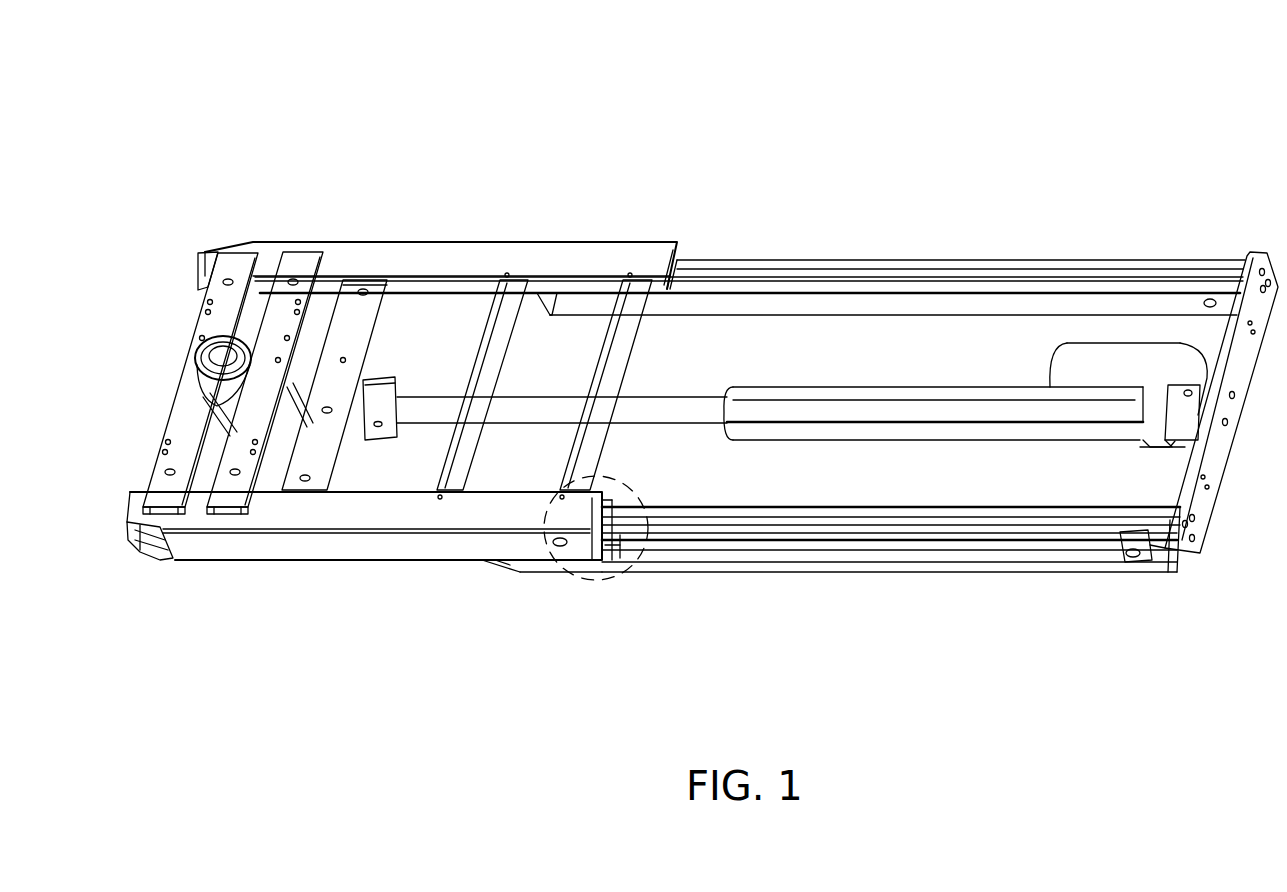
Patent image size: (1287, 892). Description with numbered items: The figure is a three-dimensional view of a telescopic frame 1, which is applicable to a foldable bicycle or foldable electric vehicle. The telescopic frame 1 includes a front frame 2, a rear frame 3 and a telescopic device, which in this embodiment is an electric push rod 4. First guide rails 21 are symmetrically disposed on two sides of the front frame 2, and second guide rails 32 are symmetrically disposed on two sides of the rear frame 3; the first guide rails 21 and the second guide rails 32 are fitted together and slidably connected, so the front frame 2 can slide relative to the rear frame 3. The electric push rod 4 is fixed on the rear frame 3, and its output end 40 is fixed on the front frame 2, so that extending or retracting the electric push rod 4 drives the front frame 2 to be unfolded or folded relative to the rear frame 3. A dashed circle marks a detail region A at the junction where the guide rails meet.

The telescopic frame 1 is at (184, 117).
The front frame 2 is at (279, 548).
The first guide rails 21 is at (572, 254).
The rear frame 3 is at (877, 562).
The second guide rails 32 is at (948, 287).
The electric push rod 4 is at (832, 410).
The output end 40 is at (653, 407).
The detail region A is at (592, 595).